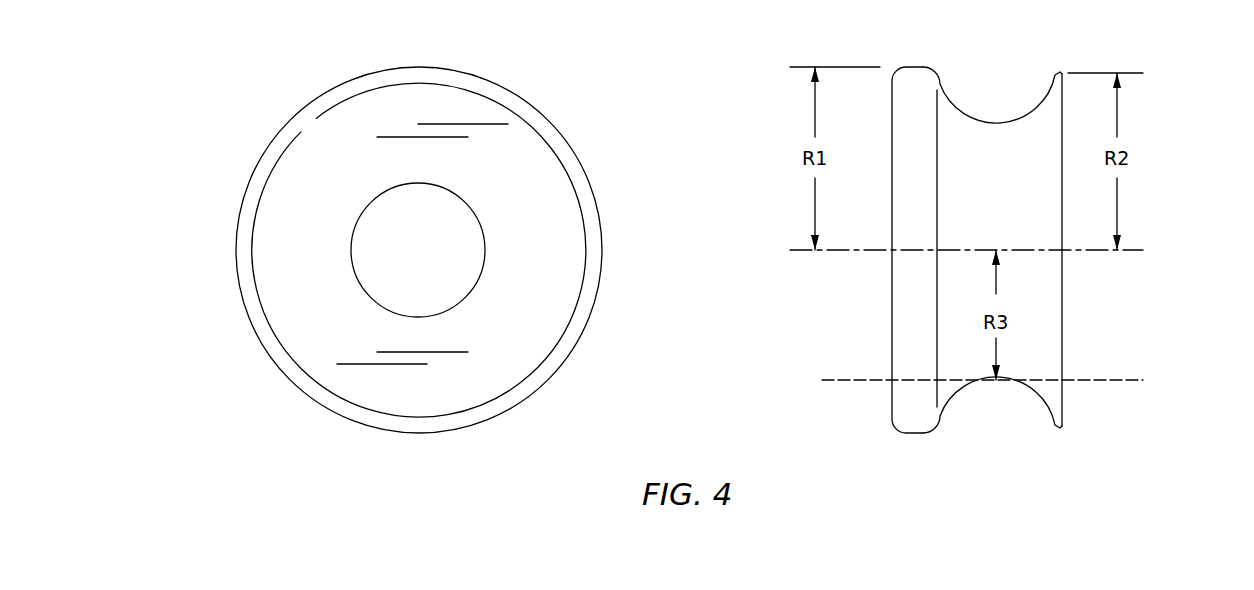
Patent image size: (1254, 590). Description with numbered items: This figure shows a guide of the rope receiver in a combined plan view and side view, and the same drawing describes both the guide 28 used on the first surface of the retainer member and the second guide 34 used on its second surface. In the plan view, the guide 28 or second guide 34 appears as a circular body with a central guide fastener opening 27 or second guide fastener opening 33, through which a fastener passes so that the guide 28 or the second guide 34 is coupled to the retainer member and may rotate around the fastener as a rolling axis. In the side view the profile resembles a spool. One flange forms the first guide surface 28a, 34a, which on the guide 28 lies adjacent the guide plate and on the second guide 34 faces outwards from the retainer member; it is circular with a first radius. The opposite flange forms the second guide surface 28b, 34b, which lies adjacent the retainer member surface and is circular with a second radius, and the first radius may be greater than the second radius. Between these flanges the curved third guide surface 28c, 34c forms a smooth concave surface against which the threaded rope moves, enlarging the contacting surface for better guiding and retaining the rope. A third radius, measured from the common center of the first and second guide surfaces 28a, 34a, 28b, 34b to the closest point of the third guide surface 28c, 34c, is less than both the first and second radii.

The guide fastener opening 27 is at (499, 212).
The second guide fastener opening 33 is at (468, 205).
The guide 28 is at (721, 233).
The second guide 34 is at (557, 370).
The first guide surface 28a is at (825, 250).
The first guide surface 34a is at (892, 302).
The second guide surface 28b is at (1134, 250).
The second guide surface 34b is at (1062, 202).
The third guide surface 28c is at (987, 223).
The third guide surface 34c is at (964, 111).